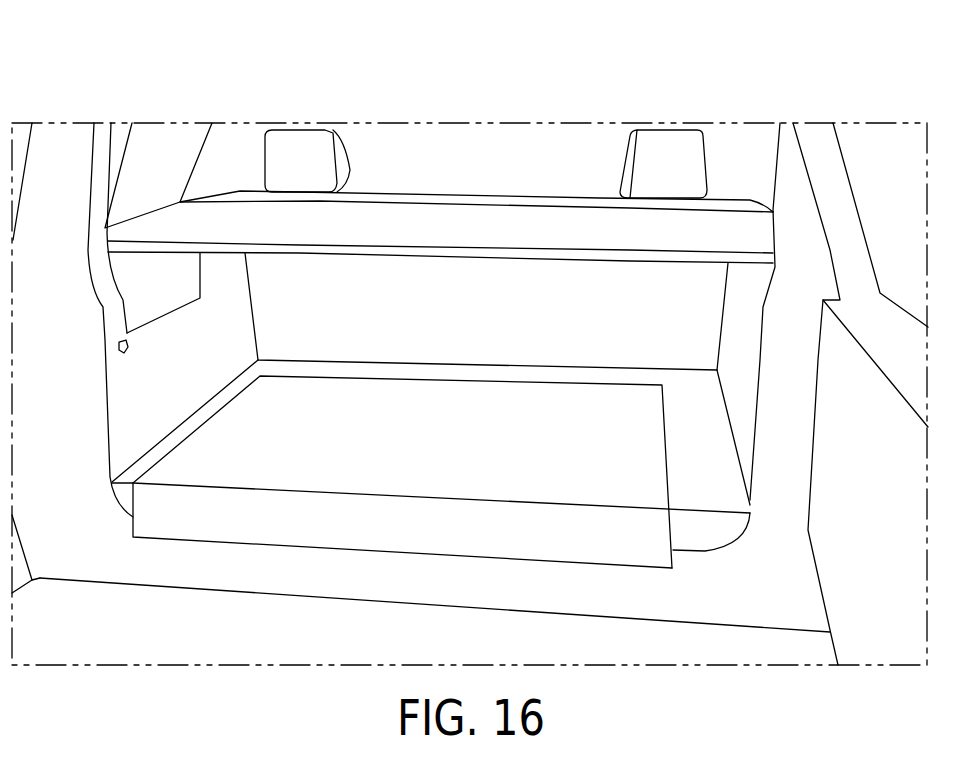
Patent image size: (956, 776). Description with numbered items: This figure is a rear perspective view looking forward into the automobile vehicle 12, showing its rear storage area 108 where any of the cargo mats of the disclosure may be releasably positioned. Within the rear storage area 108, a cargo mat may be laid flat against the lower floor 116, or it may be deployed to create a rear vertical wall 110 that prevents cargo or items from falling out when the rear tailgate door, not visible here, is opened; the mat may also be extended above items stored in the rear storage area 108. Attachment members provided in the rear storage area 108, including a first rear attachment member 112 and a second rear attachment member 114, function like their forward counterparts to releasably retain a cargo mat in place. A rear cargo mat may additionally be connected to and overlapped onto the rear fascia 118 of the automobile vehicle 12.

The automobile vehicle 12 is at (238, 98).
The rear storage area 108 is at (737, 333).
The rear vertical wall 110 is at (253, 523).
The first rear attachment member 112 is at (125, 495).
The second rear attachment member 114 is at (122, 353).
The lower floor 116 is at (693, 473).
The rear fascia 118 is at (405, 589).